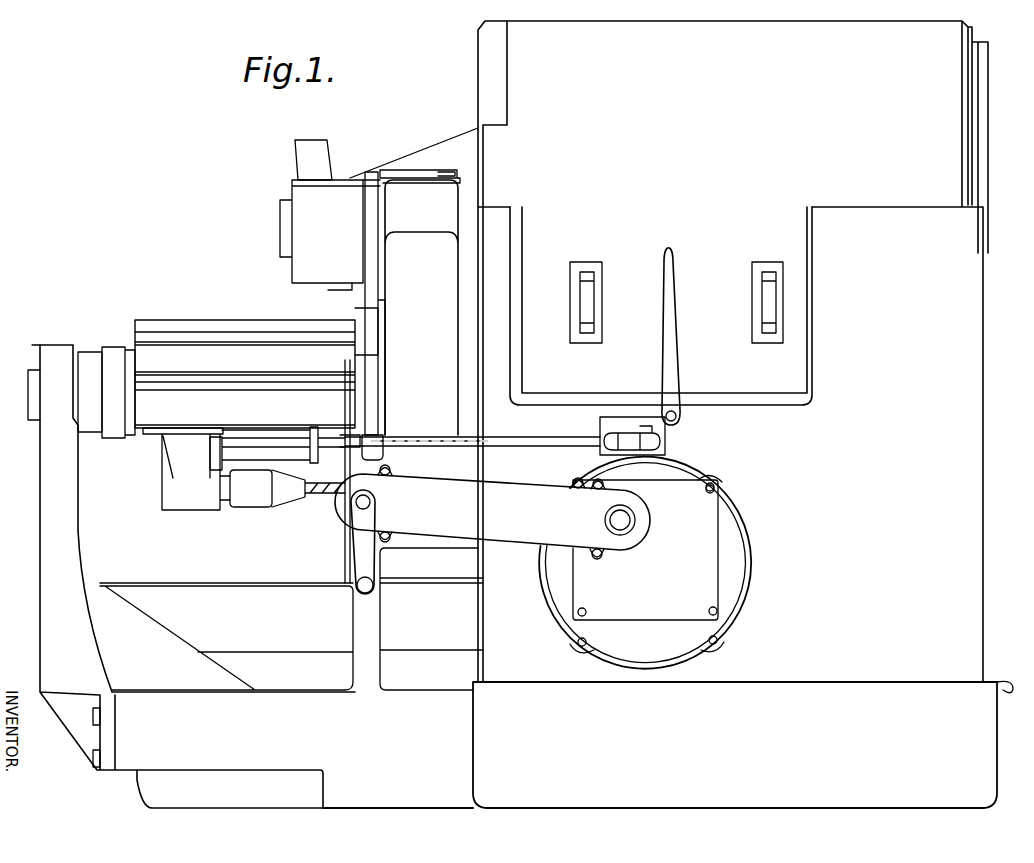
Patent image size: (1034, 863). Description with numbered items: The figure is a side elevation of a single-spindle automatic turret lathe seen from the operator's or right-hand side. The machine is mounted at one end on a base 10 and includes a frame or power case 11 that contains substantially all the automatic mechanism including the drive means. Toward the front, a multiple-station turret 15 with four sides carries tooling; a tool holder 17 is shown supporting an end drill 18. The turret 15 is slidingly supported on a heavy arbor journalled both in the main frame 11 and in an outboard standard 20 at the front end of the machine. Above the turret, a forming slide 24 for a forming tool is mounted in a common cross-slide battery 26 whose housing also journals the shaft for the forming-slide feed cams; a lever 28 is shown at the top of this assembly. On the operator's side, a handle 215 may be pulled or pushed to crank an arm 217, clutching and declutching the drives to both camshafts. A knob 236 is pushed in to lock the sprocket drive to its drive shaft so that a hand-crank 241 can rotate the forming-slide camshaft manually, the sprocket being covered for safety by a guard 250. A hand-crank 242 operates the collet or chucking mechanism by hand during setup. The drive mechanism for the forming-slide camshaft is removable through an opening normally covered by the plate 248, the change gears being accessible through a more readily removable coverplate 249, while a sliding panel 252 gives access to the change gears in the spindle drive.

The base 10 is at (826, 688).
The frame or power case 11 is at (975, 598).
The multiple-station turret 15 is at (180, 330).
The tool holder 17 is at (195, 505).
The end drill 18 is at (297, 493).
The outboard standard 20 is at (43, 500).
The forming slide 24 is at (430, 173).
The cross-slide battery 26 is at (449, 257).
The control lever 28 is at (302, 153).
The handle 215 is at (310, 430).
The arm 217 is at (658, 440).
The knob 236 is at (610, 520).
The hand-crank 241 is at (360, 548).
The hand-crank 242 is at (673, 323).
The plate 248 is at (748, 563).
The coverplate 249 is at (655, 612).
The guard 250 is at (482, 486).
The sliding panel 252 is at (714, 210).